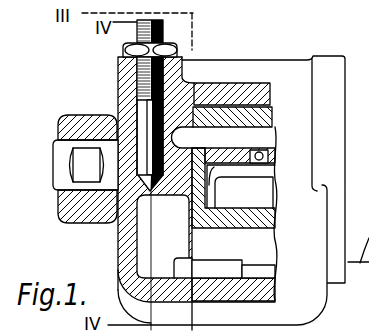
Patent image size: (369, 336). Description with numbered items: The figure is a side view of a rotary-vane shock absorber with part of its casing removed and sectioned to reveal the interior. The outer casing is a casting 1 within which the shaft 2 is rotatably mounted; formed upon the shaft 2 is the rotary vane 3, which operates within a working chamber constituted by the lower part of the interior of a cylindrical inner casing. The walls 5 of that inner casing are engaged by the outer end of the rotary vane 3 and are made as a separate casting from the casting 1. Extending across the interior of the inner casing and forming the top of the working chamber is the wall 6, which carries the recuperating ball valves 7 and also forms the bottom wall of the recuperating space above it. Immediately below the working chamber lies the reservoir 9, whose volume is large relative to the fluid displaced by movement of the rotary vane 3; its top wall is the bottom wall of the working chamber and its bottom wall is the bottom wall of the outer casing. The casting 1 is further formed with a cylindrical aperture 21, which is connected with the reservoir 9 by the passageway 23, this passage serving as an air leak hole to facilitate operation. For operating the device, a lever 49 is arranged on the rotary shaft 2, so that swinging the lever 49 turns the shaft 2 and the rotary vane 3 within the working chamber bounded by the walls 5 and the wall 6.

The casting constituting the outer casing 1 is at (243, 92).
The shaft 2 is at (110, 158).
The rotary vane 3 is at (262, 200).
The walls of the cylindrical inner casing 5 is at (262, 218).
The wall 6 is at (252, 153).
The recuperating ball valves 7 is at (275, 154).
The reservoir 9 is at (143, 256).
The cylindrical aperture 21 is at (140, 184).
The passageway 23 is at (153, 197).
The lever 49 is at (70, 125).